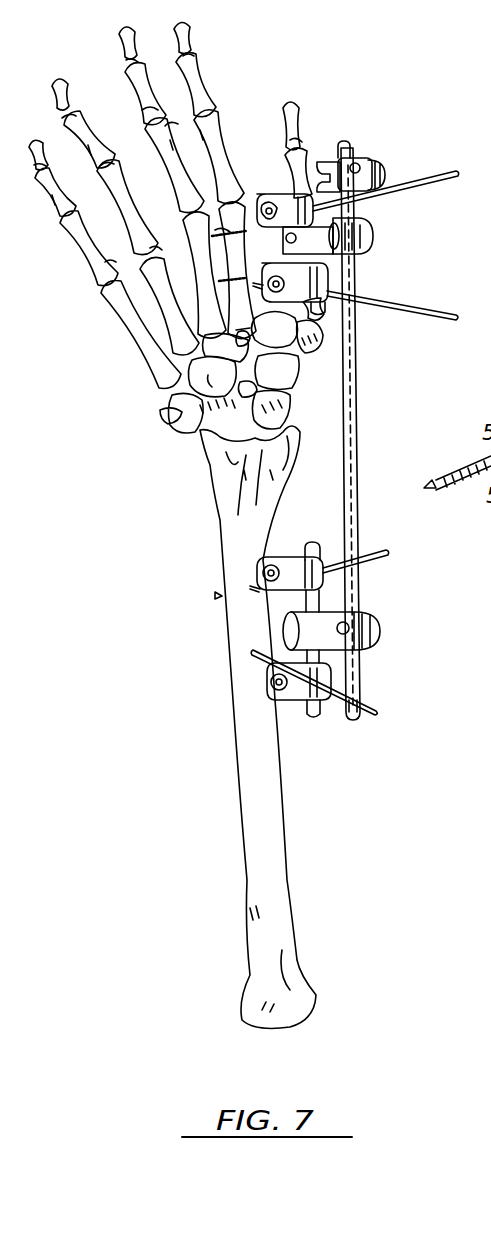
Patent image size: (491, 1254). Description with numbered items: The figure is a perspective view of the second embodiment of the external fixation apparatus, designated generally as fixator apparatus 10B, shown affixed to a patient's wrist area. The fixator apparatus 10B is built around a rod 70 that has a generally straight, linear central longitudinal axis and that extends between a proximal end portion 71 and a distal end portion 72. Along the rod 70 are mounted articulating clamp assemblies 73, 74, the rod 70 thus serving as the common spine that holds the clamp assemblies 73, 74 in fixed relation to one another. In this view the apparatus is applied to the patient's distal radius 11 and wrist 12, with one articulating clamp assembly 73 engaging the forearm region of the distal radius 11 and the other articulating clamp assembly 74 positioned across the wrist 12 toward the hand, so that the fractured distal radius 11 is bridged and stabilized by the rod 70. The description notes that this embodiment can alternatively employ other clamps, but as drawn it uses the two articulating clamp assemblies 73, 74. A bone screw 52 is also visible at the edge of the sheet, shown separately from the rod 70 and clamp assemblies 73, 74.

The fixator apparatus 10B is at (203, 696).
The distal radius 11 is at (252, 783).
The wrist 12 is at (170, 428).
The bone screw 52 is at (457, 498).
The rod 70 is at (357, 423).
The proximal end portion 71 is at (358, 720).
The distal end portion 72 is at (347, 147).
The articulating clamp assembly 73 is at (396, 638).
The articulating clamp assembly 74 is at (395, 250).